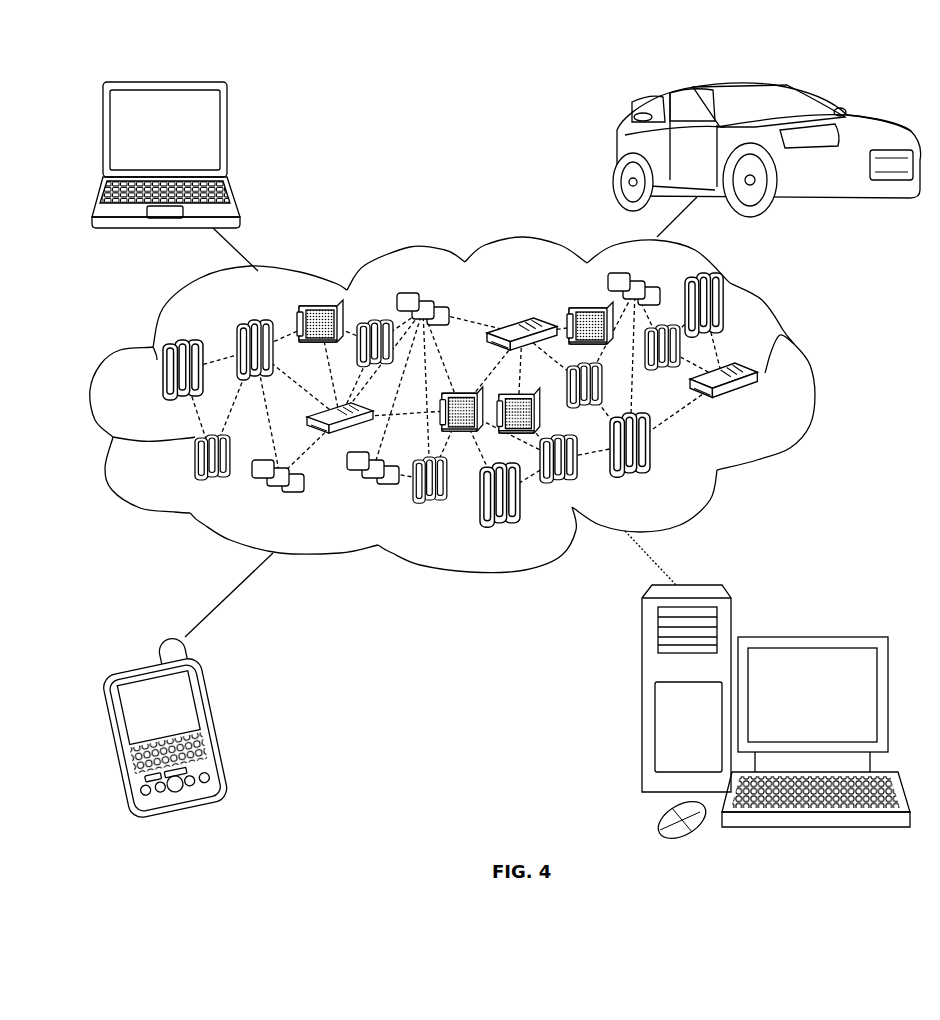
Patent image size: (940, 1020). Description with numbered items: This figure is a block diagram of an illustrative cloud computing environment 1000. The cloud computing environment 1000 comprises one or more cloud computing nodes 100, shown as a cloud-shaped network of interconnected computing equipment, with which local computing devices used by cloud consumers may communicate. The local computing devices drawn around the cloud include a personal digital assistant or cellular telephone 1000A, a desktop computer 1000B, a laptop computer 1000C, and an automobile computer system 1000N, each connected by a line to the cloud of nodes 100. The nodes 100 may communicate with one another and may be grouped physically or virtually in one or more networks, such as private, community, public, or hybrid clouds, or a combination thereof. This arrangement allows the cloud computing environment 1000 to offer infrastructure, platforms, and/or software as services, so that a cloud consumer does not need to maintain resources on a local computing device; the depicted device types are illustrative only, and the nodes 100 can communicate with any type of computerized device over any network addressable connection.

The cloud computing environment 1000 is at (812, 378).
The cloud computing nodes 100 is at (757, 405).
The personal digital assistant (PDA) or cellular telephone 1000A is at (220, 720).
The desktop computer 1000B is at (811, 635).
The laptop computer 1000C is at (229, 138).
The automobile computer system 1000N is at (615, 152).